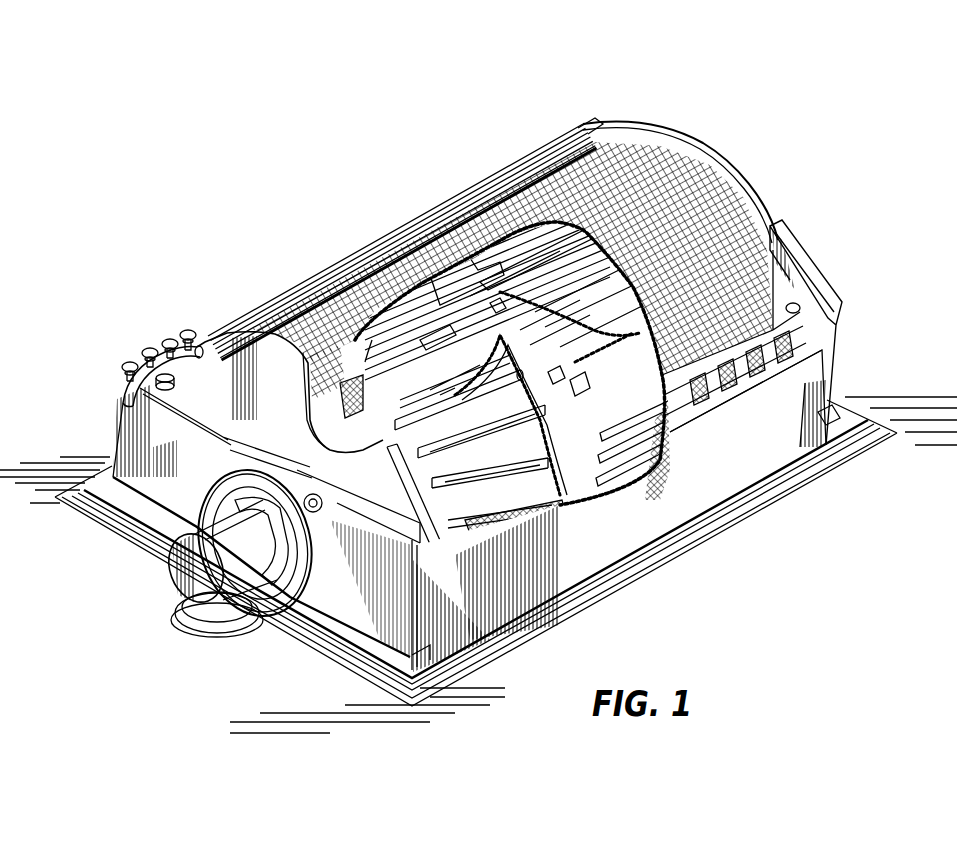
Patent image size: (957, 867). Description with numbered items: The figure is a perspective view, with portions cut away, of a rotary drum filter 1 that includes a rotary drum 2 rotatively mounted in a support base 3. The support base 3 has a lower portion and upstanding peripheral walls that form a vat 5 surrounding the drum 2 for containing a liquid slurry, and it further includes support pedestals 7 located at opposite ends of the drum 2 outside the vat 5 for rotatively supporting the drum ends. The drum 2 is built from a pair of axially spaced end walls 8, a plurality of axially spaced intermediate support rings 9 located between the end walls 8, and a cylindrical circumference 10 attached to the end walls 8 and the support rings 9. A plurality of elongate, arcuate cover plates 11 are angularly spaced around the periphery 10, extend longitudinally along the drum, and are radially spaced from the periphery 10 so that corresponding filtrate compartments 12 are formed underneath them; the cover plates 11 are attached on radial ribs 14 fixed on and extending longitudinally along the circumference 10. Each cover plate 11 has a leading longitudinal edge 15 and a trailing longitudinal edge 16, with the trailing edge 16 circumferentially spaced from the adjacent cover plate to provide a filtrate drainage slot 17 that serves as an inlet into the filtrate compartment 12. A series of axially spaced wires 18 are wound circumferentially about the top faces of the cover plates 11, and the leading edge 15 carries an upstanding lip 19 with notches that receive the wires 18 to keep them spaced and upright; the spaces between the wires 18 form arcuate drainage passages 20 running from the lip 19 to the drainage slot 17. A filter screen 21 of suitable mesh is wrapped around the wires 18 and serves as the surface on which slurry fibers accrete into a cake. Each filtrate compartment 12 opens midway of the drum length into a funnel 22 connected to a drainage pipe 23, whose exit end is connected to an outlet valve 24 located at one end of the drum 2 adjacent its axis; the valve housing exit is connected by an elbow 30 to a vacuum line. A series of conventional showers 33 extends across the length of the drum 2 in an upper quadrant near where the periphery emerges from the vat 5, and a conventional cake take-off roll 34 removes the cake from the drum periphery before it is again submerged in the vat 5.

The rotary drum filter 1 is at (318, 253).
The rotary drum 2 is at (695, 177).
The support base 3 is at (740, 490).
The vat 5 is at (746, 453).
The support pedestals 7 is at (360, 645).
The end walls 8 is at (326, 380).
The intermediate support rings 9 is at (458, 405).
The cylindrical circumference 10 is at (552, 447).
The cover plates 11 is at (559, 386).
The filtrate compartments 12 is at (582, 392).
The radial ribs 14 is at (505, 370).
The leading longitudinal edge 15 is at (508, 350).
The trailing longitudinal edge 16 is at (482, 270).
The filtrate drainage slot 17 is at (610, 355).
The wires 18 is at (568, 280).
The upstanding lip 19 is at (650, 350).
The arcuate drainage passages 20 is at (612, 306).
The filter screen 21 is at (738, 232).
The funnel 22 is at (558, 485).
The drainage pipe 23 is at (498, 478).
The outlet valve 24 is at (322, 556).
The elbow 30 is at (200, 600).
The showers 33 is at (428, 215).
The cake take-off roll 34 is at (795, 305).